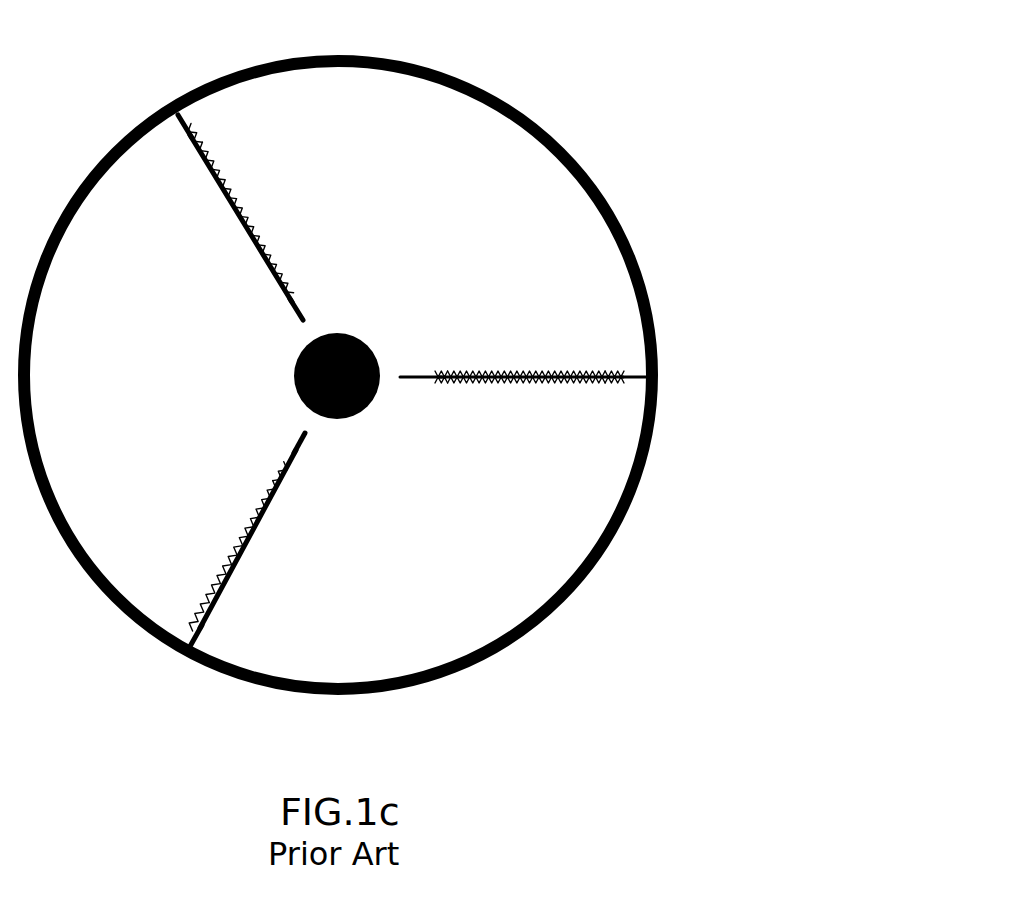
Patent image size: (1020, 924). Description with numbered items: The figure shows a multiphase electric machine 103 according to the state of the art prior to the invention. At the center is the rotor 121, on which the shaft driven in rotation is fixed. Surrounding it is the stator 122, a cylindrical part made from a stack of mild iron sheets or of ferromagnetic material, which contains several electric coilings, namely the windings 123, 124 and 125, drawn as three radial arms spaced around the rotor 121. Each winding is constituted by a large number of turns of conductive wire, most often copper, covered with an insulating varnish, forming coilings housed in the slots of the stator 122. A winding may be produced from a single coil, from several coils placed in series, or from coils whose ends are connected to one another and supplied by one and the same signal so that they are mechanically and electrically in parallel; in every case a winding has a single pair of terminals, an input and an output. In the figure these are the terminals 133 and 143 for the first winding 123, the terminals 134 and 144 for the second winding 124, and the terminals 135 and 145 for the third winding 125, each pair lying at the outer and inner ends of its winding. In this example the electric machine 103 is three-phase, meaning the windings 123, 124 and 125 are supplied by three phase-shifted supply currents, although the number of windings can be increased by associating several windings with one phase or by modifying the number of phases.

The multiphase electric machine 103 is at (622, 70).
The rotor 121 is at (357, 417).
The stator 122 is at (640, 480).
The winding 123 is at (528, 372).
The winding 124 is at (218, 210).
The winding 125 is at (250, 540).
The terminal 133 is at (630, 388).
The terminal 134 is at (188, 118).
The terminal 135 is at (187, 633).
The terminal 143 is at (432, 381).
The terminal 144 is at (298, 290).
The terminal 145 is at (292, 456).